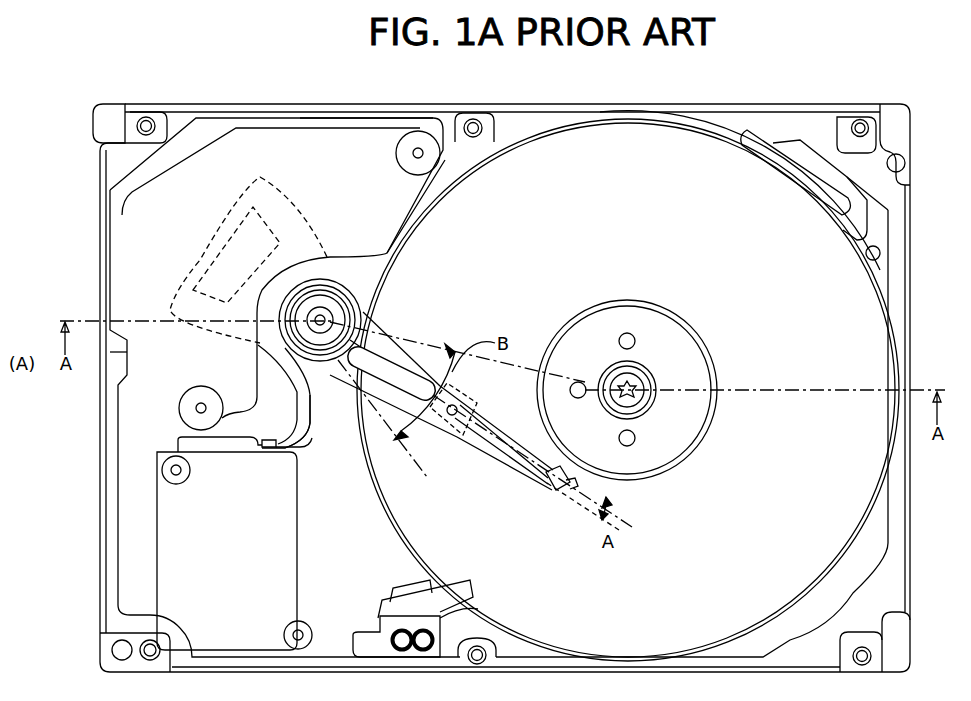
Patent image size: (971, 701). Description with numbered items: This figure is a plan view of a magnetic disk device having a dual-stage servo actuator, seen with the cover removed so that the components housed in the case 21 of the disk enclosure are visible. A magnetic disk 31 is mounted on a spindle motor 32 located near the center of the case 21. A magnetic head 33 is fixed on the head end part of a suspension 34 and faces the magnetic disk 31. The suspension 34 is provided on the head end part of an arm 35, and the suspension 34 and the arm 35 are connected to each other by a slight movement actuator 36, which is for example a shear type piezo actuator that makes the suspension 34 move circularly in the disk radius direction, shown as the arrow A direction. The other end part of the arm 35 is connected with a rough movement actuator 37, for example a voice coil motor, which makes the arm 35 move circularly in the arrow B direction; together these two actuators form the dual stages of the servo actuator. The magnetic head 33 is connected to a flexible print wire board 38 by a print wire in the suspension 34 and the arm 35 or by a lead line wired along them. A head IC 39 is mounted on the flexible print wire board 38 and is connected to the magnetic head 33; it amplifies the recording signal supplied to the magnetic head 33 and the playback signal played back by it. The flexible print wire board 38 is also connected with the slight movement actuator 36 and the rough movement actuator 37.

The case 21 is at (905, 216).
The magnetic disk 31 is at (853, 465).
The spindle motor 32 is at (678, 448).
The magnetic head 33 is at (552, 490).
The suspension 34 is at (485, 445).
The arm 35 is at (408, 362).
The slight movement actuator 36 is at (447, 440).
The rough movement actuator 37 is at (368, 150).
The flexible print wire board 38 is at (308, 428).
The head IC 39 is at (268, 438).